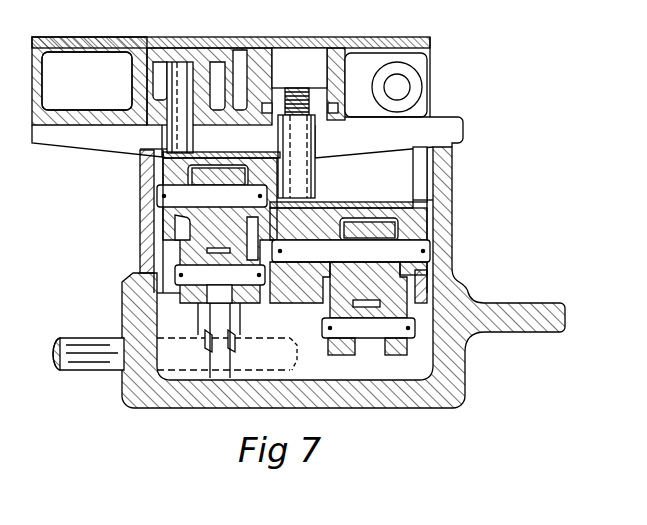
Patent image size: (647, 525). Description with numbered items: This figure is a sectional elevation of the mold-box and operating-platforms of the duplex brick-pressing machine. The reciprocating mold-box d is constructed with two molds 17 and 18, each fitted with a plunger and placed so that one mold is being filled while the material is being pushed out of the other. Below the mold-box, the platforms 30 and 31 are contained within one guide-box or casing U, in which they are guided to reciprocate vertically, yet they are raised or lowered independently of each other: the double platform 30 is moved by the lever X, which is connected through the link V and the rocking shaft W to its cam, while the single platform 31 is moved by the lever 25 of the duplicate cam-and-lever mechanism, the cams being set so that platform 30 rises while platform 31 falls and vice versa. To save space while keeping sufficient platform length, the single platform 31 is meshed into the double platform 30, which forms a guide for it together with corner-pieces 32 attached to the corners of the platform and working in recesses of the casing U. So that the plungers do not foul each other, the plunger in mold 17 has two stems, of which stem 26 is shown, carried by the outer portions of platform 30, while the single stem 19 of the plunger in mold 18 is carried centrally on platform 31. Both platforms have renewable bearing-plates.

The mold 17 is at (182, 38).
The mold-box d is at (132, 80).
The stem 26 is at (180, 107).
The mold 18 is at (299, 81).
The stem 19 is at (296, 156).
The double platform 30 is at (178, 170).
The corner-pieces 32 is at (154, 220).
The link V is at (203, 233).
The casing U is at (148, 272).
The rocking shaft W is at (79, 352).
The lever X is at (208, 305).
The single platform 31 is at (320, 225).
The lever 25 is at (372, 350).